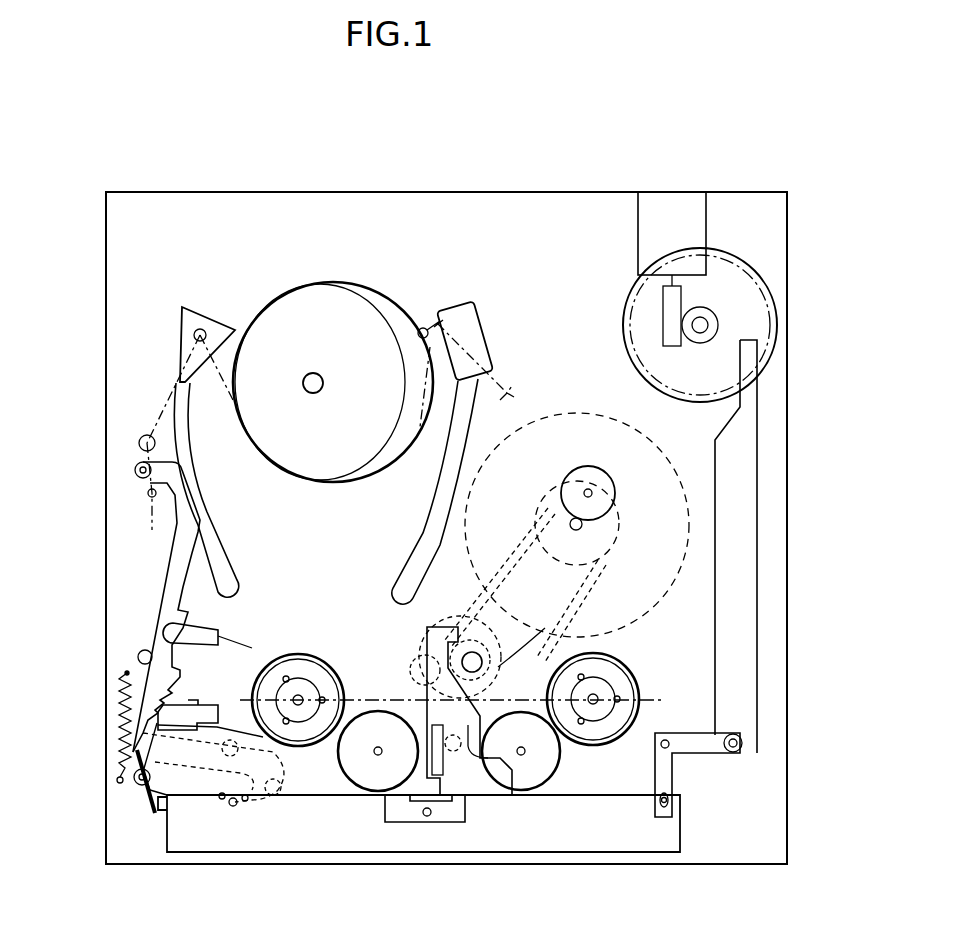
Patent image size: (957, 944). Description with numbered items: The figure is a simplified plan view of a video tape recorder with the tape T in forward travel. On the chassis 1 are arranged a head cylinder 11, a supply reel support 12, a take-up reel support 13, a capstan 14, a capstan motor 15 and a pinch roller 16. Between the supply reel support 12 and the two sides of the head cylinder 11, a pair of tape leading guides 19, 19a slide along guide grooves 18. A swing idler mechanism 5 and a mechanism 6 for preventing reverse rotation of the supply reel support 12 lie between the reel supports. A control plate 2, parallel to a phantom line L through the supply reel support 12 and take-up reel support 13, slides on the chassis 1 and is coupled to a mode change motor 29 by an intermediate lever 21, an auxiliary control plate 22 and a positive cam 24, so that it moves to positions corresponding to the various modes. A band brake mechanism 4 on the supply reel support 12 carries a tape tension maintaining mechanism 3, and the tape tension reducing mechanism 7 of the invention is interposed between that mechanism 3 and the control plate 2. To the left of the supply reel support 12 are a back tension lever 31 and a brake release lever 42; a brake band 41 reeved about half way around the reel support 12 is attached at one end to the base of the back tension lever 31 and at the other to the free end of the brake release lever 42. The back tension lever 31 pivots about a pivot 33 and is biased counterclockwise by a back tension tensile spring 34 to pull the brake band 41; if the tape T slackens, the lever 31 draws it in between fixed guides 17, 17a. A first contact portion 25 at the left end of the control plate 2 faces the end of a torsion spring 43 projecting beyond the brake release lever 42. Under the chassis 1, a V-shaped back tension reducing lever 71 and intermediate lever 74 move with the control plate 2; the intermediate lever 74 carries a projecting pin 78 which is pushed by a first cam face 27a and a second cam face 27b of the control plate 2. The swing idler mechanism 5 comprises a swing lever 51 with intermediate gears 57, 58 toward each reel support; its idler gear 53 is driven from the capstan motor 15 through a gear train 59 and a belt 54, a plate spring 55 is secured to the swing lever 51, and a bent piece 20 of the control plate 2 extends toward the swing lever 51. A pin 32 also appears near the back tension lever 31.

The chassis 1 is at (785, 318).
The control plate 2 is at (566, 845).
The tape tension maintaining mechanism 3 is at (114, 528).
The band brake mechanism 4 is at (114, 754).
The swing idler mechanism 5 is at (484, 624).
The mechanism for preventing reverse rotation of the supply reel support 6 is at (391, 832).
The tape tension reducing mechanism 7 is at (200, 779).
The head cylinder 11 is at (316, 308).
The supply reel support 12 is at (300, 680).
The take-up reel support 13 is at (620, 678).
The capstan 14 is at (582, 528).
The capstan motor 15 is at (688, 525).
The pinch roller 16 is at (605, 470).
The fixed guide 17 is at (139, 443).
The fixed guide 17a is at (148, 494).
The guide groove 18 is at (230, 545).
The tape leading guide 19 is at (215, 332).
The tape leading guide 19a is at (470, 330).
The bent piece 20 is at (481, 790).
The intermediate lever 21 is at (675, 755).
The auxiliary control plate 22 is at (755, 597).
The positive cam 24 is at (735, 295).
The first contact portion 25 is at (162, 812).
The first cam face 27a is at (243, 798).
The second cam face 27b is at (225, 805).
The mode change motor 29 is at (690, 213).
The back tension lever 31 is at (160, 595).
The pin 32 is at (135, 470).
The pivot 33 is at (138, 657).
The back tension tensile spring 34 is at (119, 722).
The brake band 41 is at (228, 628).
The brake release lever 42 is at (140, 795).
The torsion spring 43 is at (153, 807).
The swing lever 51 is at (505, 655).
The idler gear 53 is at (560, 645).
The belt 54 is at (500, 575).
The plate spring 55 is at (430, 725).
The intermediate gear 57 is at (370, 775).
The intermediate gear 58 is at (530, 772).
The gear train 59 is at (418, 657).
The back tension reducing lever 71 is at (195, 640).
The intermediate lever 74 is at (282, 768).
The projecting pin 78 is at (237, 807).
The tape T is at (165, 413).
The phantom line L is at (640, 700).